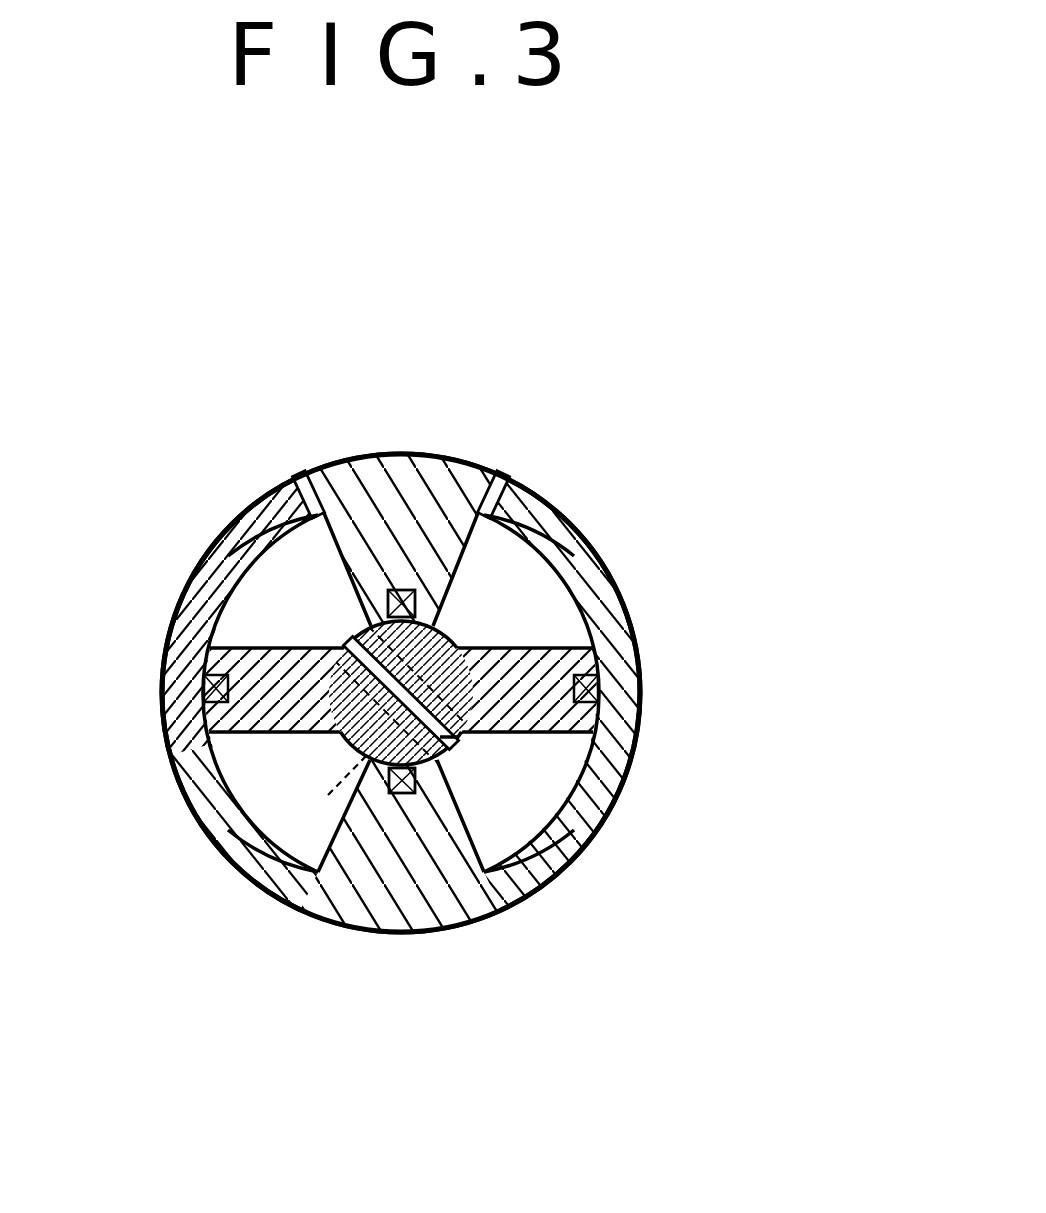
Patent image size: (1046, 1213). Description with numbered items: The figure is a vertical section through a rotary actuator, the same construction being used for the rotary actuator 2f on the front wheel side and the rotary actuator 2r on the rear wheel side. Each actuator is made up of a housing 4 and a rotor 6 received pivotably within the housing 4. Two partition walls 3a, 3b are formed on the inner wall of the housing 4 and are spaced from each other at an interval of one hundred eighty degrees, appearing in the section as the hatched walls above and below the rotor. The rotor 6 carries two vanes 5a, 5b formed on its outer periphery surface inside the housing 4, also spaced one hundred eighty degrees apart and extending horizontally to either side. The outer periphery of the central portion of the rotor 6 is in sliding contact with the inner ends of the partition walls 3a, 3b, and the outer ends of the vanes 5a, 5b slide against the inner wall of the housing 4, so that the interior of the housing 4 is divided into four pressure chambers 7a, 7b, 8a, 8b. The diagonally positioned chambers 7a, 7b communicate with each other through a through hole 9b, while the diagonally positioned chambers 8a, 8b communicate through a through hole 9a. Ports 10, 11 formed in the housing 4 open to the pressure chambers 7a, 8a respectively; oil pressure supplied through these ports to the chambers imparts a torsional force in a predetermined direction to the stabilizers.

The rotary actuator 2f is at (539, 693).
The rotary actuator 2r is at (401, 693).
The partition wall 3a is at (395, 497).
The partition wall 3b is at (410, 887).
The housing 4 is at (539, 693).
The vane 5a is at (560, 734).
The vane 5b is at (238, 733).
The rotor 6 is at (437, 633).
The pressure chamber 7a is at (567, 632).
The pressure chamber 7b is at (300, 843).
The pressure chamber 8a is at (262, 585).
The pressure chamber 8b is at (490, 850).
The through hole 9a is at (443, 740).
The through hole 9b is at (311, 779).
The port 10 is at (500, 483).
The port 11 is at (303, 483).